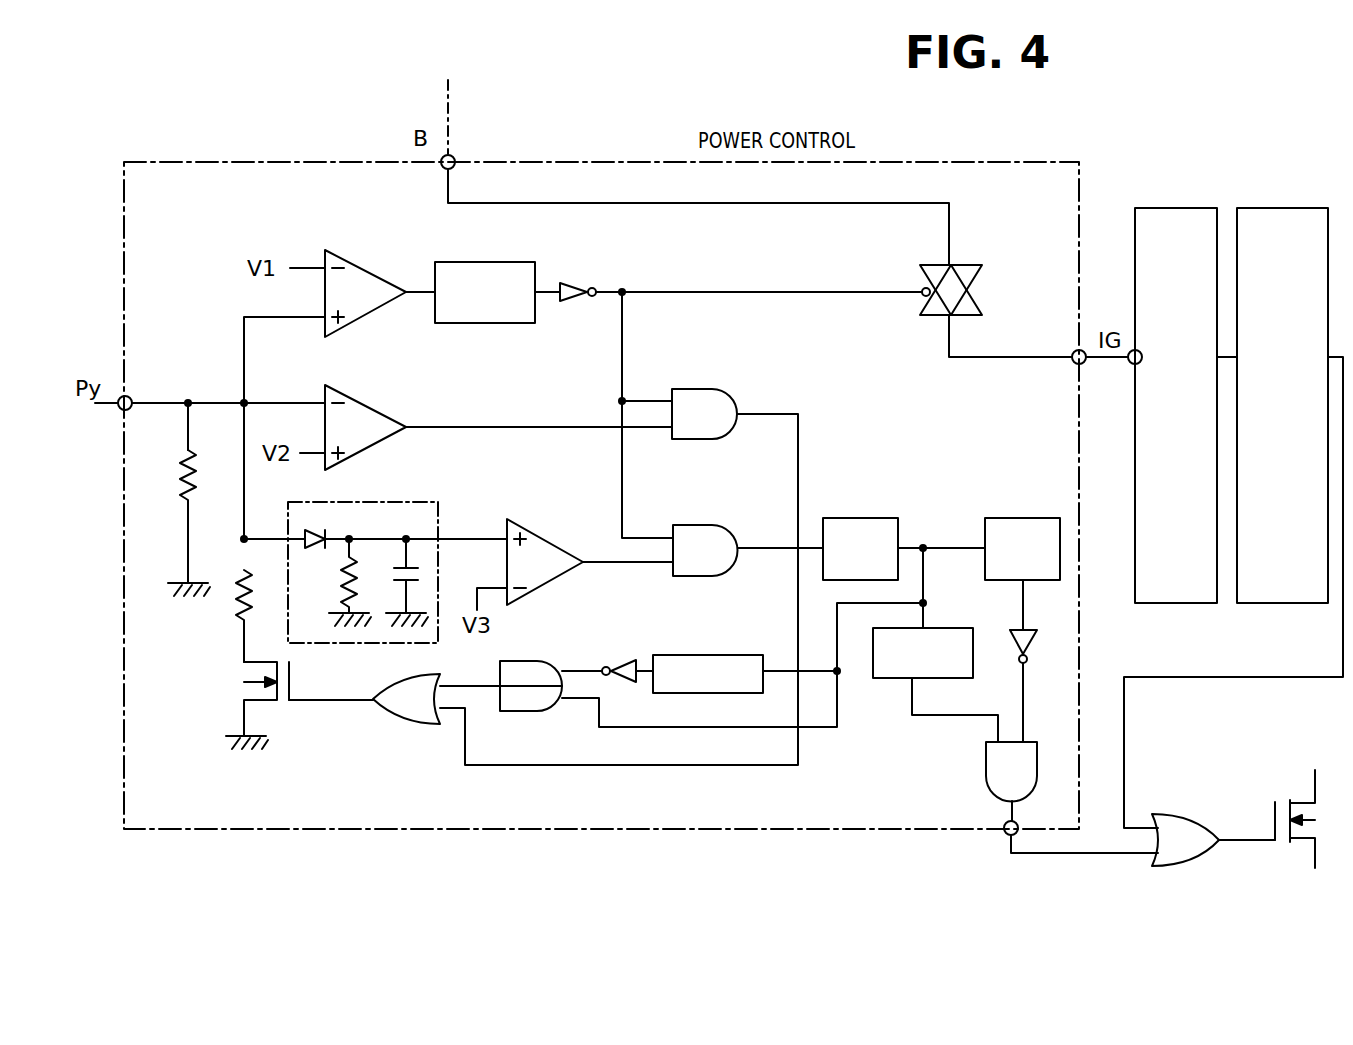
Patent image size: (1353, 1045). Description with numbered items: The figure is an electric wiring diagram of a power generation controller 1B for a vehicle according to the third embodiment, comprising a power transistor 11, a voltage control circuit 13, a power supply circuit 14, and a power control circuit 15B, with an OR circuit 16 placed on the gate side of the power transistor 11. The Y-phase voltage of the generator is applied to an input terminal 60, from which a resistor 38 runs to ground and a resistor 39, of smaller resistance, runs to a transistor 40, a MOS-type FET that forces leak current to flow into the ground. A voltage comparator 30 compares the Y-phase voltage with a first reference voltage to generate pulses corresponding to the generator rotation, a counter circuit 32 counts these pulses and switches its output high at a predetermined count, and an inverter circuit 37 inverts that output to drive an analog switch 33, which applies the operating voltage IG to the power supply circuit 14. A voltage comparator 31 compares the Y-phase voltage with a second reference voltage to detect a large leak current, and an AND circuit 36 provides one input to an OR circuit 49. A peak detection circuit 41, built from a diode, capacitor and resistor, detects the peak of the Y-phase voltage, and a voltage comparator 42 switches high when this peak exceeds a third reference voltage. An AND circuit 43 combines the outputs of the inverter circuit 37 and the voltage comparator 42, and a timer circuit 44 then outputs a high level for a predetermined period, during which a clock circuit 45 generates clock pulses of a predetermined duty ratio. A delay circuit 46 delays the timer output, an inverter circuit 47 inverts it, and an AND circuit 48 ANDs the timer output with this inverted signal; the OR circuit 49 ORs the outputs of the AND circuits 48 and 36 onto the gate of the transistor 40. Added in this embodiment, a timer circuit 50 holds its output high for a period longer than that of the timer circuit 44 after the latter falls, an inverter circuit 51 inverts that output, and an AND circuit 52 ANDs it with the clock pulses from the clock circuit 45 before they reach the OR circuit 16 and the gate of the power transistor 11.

The power generation controller 1B is at (1172, 125).
The power transistor 11 is at (1284, 800).
The voltage control circuit 13 is at (1257, 208).
The power supply circuit 14 is at (1155, 208).
The power control circuit 15B is at (1010, 160).
The OR circuit 16 is at (1165, 815).
The voltage comparator 30 is at (372, 268).
The voltage comparator 31 is at (372, 404).
The counter circuit 32 is at (512, 262).
The analog switch 33 is at (984, 268).
The AND circuit 36 is at (702, 389).
The inverter circuit 37 is at (576, 282).
The resistor 38 is at (177, 477).
The resistor 39 is at (230, 598).
The transistor 40 is at (286, 698).
The peak detection circuit 41 is at (392, 502).
The voltage comparator 42 is at (580, 498).
The AND circuit 43 is at (712, 525).
The timer circuit 44 is at (870, 518).
The clock circuit 45 is at (893, 680).
The delay circuit 46 is at (715, 655).
The inverter circuit 47 is at (620, 656).
The AND circuit 48 is at (537, 661).
The OR circuit 49 is at (402, 720).
The timer circuit 50 is at (1000, 518).
The inverter circuit 51 is at (1032, 640).
The AND circuit 52 is at (985, 765).
The input terminal 60 is at (132, 400).